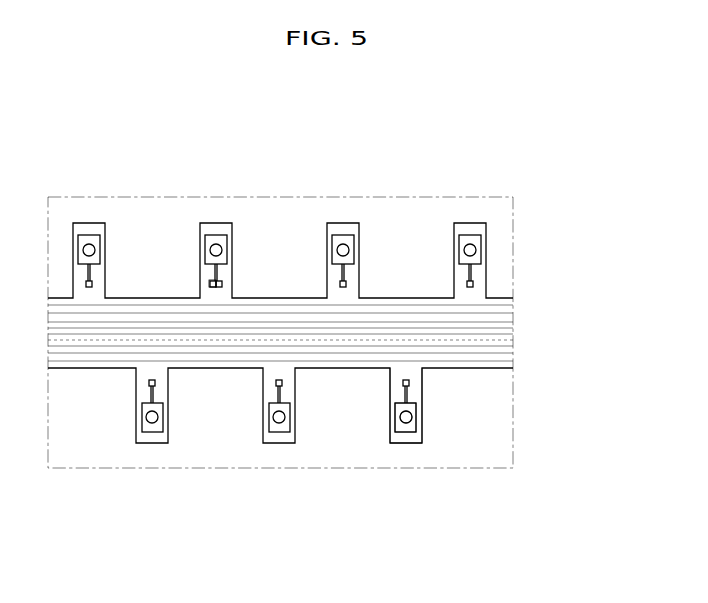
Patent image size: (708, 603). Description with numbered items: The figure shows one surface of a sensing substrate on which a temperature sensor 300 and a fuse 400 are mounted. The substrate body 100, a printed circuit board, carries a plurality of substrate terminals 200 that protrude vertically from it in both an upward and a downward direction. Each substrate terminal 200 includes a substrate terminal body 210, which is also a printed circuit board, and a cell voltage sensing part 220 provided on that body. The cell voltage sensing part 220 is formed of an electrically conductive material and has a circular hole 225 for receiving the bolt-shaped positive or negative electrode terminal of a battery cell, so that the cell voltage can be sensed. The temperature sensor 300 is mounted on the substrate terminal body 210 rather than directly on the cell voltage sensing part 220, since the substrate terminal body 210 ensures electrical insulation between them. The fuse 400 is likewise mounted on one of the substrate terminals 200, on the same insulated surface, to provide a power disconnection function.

The substrate body 100 is at (487, 335).
The substrate terminal 200 is at (394, 224).
The substrate terminal body 210 is at (390, 388).
The cell voltage sensing part 220 is at (408, 432).
The circular hole 225 is at (412, 415).
The temperature sensor 300 is at (210, 282).
The fuse 400 is at (221, 282).